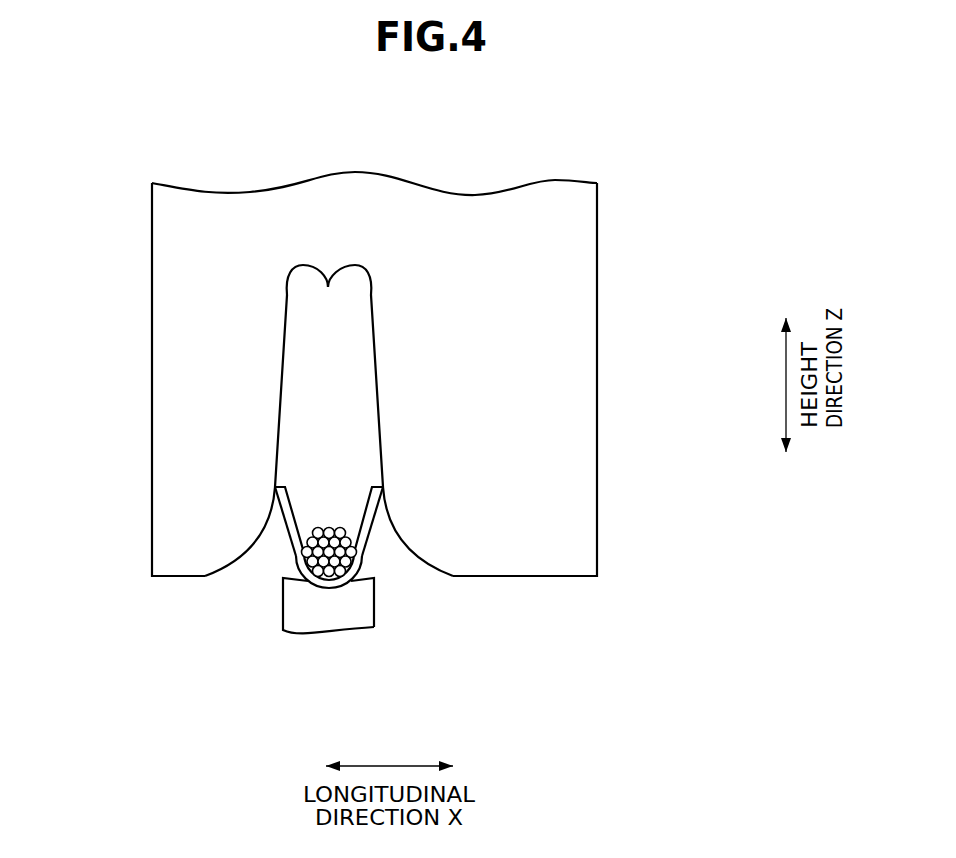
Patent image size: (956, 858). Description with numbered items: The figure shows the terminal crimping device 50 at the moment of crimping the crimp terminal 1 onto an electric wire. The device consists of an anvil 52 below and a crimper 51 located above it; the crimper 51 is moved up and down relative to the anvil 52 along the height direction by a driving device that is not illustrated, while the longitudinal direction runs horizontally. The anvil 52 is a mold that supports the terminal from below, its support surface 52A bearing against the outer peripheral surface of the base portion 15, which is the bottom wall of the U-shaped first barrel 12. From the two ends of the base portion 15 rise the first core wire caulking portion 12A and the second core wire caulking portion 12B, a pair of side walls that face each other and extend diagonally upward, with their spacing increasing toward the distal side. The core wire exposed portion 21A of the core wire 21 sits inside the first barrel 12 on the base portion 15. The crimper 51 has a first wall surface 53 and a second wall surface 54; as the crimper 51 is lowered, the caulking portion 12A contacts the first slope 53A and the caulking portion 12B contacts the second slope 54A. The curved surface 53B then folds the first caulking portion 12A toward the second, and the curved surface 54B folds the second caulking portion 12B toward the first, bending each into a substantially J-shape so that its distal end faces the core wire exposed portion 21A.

The crimp terminal 1 is at (329, 537).
The first barrel 12 is at (347, 591).
The first core wire caulking portion 12A is at (366, 556).
The second core wire caulking portion 12B is at (289, 550).
The base portion 15 is at (328, 584).
The core wire 21 is at (334, 477).
The core wire exposed portion 21A is at (328, 522).
The terminal crimping device 50 is at (378, 343).
The crimper 51 is at (447, 178).
The anvil 52 is at (398, 621).
The support surface 52A is at (373, 578).
The first wall surface 53 is at (179, 376).
The first slope 53A is at (284, 375).
The curved surface 53B is at (306, 267).
The second wall surface 54 is at (527, 376).
The second slope 54A is at (378, 418).
The curved surface 54B is at (350, 267).